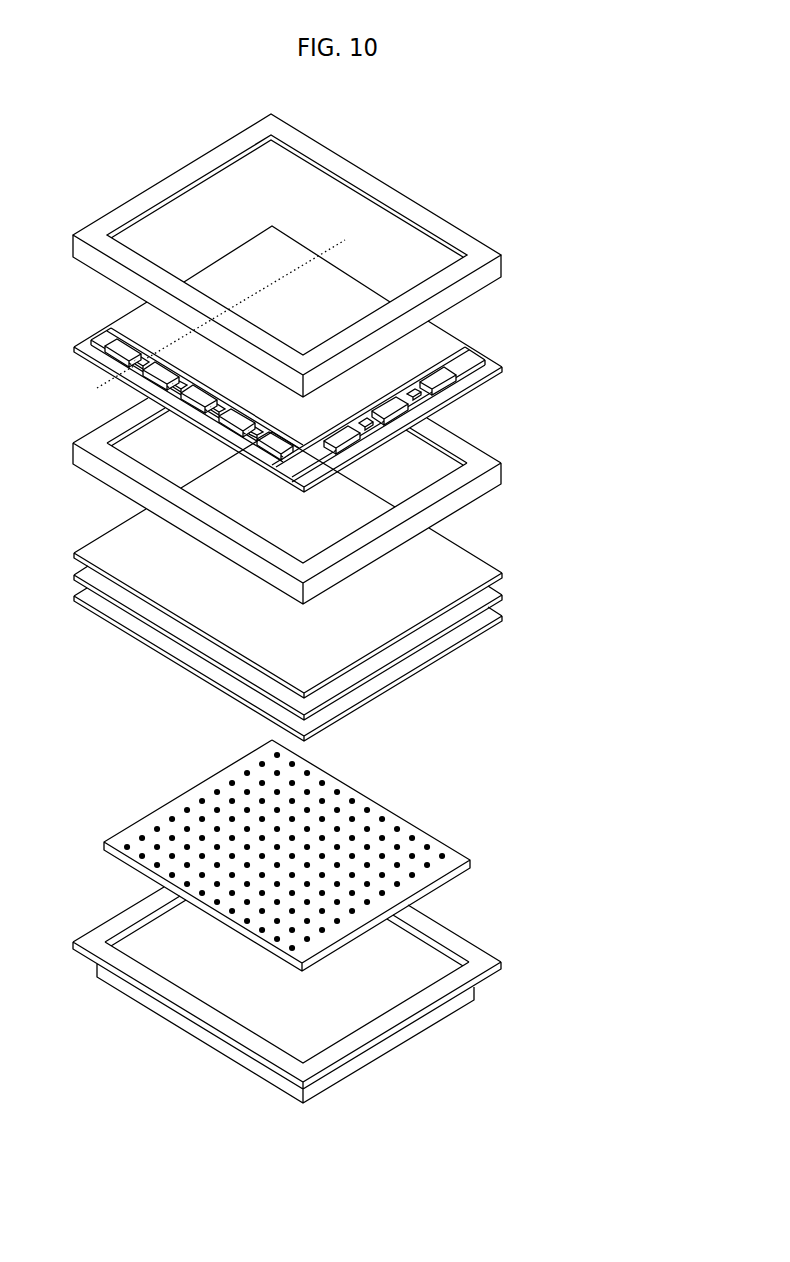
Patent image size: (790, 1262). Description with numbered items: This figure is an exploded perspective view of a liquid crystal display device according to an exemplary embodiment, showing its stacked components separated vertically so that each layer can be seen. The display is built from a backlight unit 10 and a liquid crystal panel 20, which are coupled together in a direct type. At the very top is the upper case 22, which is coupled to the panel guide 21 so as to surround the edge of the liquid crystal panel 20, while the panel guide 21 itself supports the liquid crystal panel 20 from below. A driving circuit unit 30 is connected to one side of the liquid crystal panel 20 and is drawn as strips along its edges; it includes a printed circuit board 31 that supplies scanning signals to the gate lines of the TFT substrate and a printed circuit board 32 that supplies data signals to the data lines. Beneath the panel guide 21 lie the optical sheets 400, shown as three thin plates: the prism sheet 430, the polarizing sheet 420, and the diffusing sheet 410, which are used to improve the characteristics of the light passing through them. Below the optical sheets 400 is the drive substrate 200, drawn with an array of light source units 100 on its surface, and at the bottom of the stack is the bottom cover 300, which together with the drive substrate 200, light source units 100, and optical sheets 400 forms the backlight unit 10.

The backlight unit 10 is at (677, 573).
The upper case 22 is at (502, 262).
The liquid crystal panel 20 is at (430, 327).
The driving circuit unit 30 is at (346, 405).
The printed circuit board 31 is at (482, 346).
The printed circuit board 32 is at (382, 442).
The panel guide 21 is at (502, 470).
The optical sheets 400 is at (373, 586).
The prism sheet 430 is at (502, 574).
The polarizing sheet 420 is at (502, 596).
The diffusing sheet 410 is at (502, 617).
The light source units 100 is at (251, 855).
The drive substrate 200 is at (162, 803).
The bottom cover 300 is at (476, 936).